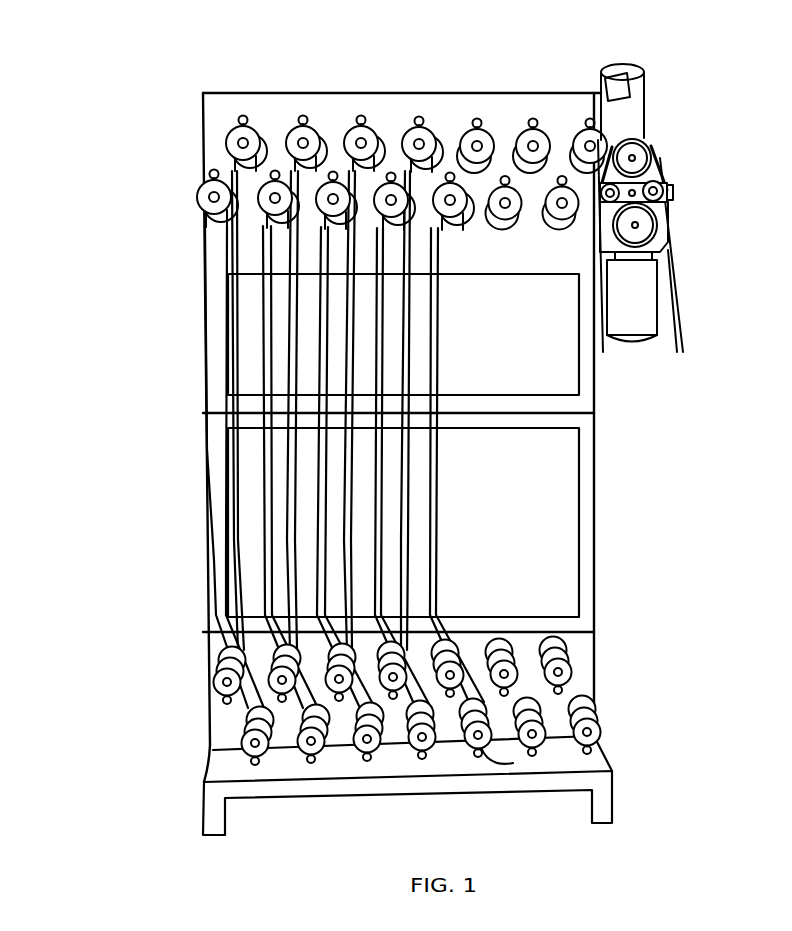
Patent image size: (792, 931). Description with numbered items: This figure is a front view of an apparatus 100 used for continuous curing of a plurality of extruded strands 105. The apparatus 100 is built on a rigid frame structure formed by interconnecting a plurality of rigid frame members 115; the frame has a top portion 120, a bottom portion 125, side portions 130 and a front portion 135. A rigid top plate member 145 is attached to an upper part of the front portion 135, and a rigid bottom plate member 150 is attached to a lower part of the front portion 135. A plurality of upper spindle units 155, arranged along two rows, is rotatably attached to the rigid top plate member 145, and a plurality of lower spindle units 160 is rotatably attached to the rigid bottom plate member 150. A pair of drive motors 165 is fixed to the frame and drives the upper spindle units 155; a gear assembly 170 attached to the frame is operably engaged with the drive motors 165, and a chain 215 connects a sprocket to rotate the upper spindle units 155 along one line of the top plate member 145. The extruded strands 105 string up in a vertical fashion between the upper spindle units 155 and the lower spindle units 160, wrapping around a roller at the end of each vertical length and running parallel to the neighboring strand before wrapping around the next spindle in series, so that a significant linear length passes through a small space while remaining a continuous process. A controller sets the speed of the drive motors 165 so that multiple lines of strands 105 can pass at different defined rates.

The apparatus 100 is at (176, 96).
The extruded strands 105 is at (293, 330).
The rigid frame members 115 is at (588, 383).
The top portion 120 is at (535, 92).
The bottom portion 125 is at (475, 790).
The side portions 130 is at (207, 443).
The front portion 135 is at (532, 550).
The rigid top plate member 145 is at (335, 105).
The rigid bottom plate member 150 is at (228, 718).
The upper spindle units 155 is at (237, 136).
The lower spindle units 160 is at (562, 667).
The drive motors 165 is at (635, 115).
The gear assembly 170 is at (663, 169).
The chain 215 is at (673, 290).